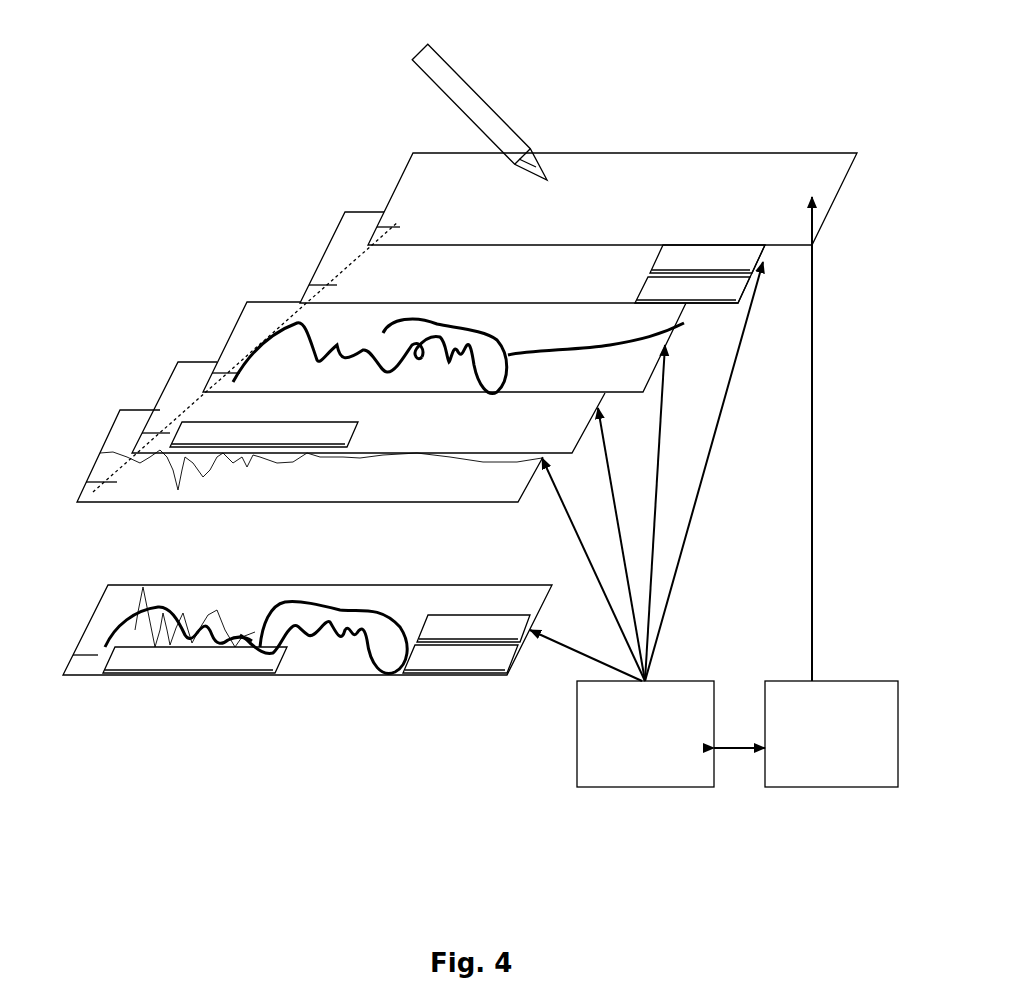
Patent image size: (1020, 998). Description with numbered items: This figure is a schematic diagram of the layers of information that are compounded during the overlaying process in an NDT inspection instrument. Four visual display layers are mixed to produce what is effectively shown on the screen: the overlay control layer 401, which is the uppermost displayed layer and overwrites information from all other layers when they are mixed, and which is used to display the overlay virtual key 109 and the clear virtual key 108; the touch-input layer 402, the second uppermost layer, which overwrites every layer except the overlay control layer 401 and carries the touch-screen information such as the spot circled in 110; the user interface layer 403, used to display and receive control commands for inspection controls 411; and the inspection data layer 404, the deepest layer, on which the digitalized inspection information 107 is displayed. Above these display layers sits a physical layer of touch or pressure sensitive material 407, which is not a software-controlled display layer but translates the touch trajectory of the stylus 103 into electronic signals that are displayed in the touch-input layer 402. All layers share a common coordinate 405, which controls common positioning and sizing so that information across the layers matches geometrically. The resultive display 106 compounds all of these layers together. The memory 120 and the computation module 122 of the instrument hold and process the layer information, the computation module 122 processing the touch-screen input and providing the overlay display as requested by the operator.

The stylus 103 is at (438, 75).
The resultive display 106 is at (110, 617).
The digitalized inspection information 107 is at (240, 480).
The clear virtual key 108 is at (662, 259).
The overlay virtual key 109 is at (642, 291).
The circled spot 110 is at (483, 354).
The memory 120 is at (587, 778).
The computation module 122 is at (783, 778).
The overlay control layer 401 is at (337, 247).
The touch-input layer 402 is at (246, 323).
The user interface layer 403 is at (177, 397).
The inspection data layer 404 is at (119, 440).
The common coordinate 405 is at (163, 445).
The touch or pressure sensitive material layer 407 is at (415, 182).
The inspection controls 411 is at (357, 437).